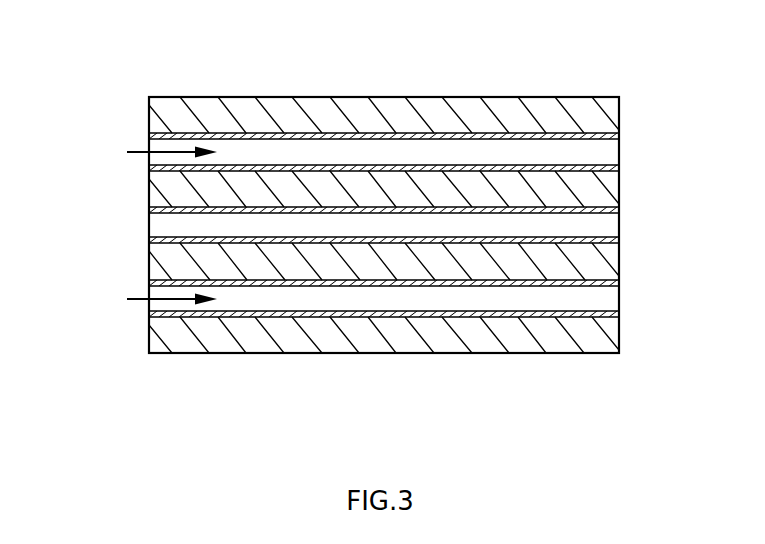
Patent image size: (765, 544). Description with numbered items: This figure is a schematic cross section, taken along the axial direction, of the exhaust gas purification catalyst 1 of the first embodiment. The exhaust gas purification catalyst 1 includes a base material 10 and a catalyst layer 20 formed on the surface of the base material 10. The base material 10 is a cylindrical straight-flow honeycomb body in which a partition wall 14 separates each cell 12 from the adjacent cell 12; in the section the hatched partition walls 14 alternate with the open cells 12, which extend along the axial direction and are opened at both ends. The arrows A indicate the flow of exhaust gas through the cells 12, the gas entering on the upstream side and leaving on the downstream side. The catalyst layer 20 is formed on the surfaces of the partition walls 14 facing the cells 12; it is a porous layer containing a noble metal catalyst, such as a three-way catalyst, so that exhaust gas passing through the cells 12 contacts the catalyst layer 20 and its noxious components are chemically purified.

The exhaust gas purification catalyst 1 is at (73, 25).
The base material 10 is at (347, 98).
The cell 12 is at (490, 148).
The partition wall 14 is at (568, 97).
The catalyst layer 20 is at (280, 160).
The gas flow direction A is at (137, 152).